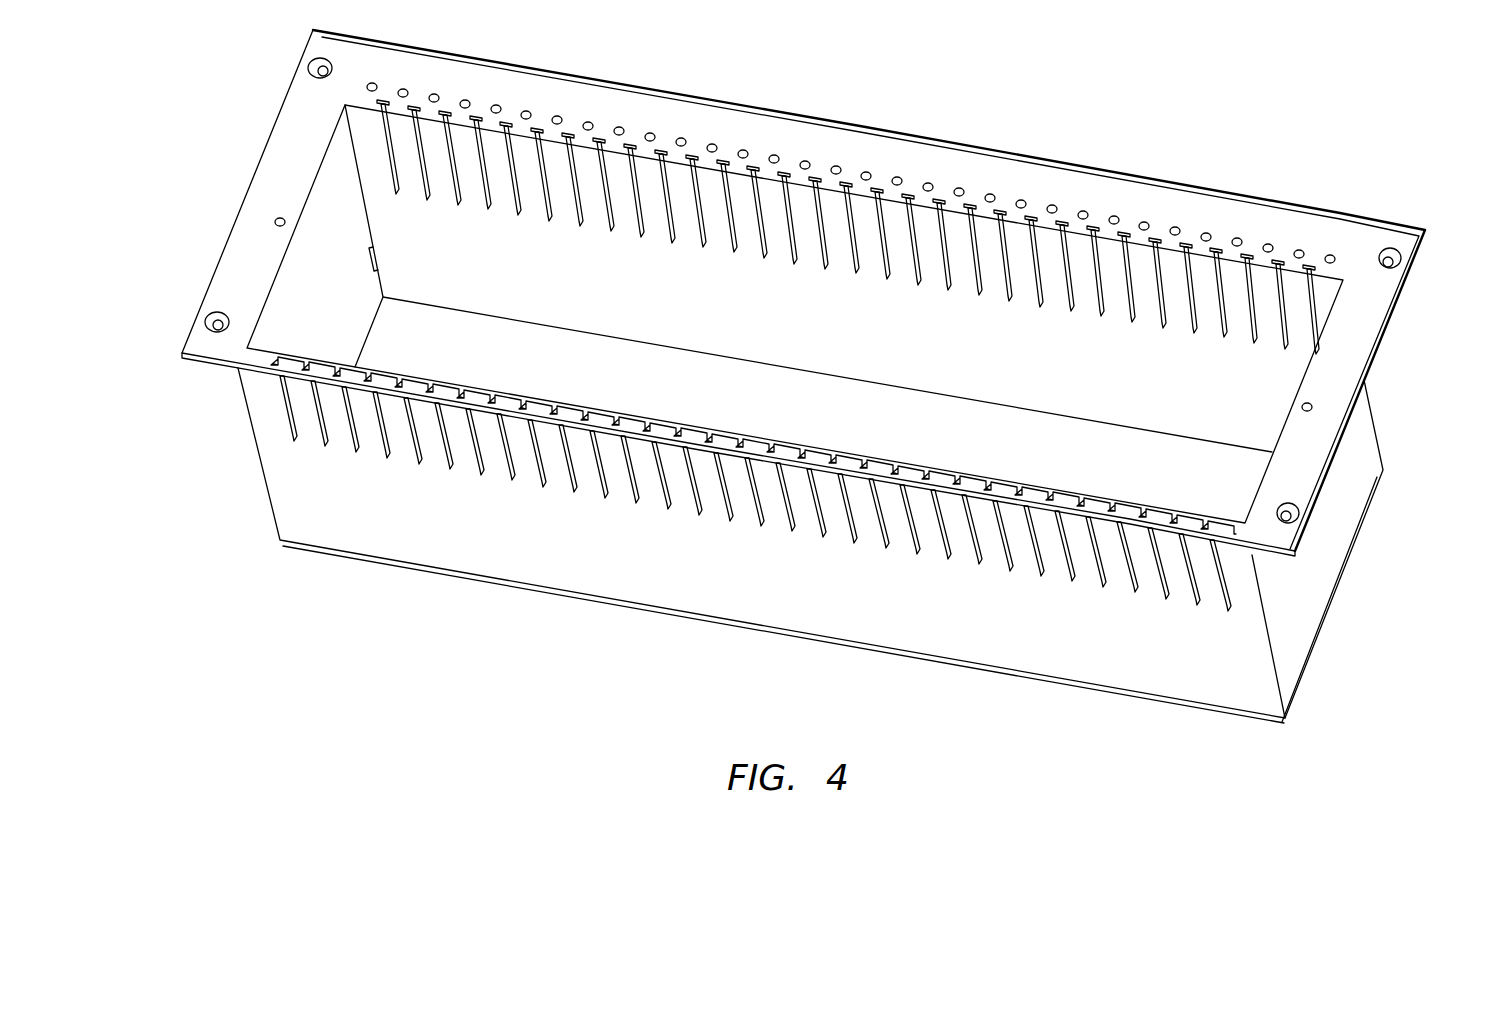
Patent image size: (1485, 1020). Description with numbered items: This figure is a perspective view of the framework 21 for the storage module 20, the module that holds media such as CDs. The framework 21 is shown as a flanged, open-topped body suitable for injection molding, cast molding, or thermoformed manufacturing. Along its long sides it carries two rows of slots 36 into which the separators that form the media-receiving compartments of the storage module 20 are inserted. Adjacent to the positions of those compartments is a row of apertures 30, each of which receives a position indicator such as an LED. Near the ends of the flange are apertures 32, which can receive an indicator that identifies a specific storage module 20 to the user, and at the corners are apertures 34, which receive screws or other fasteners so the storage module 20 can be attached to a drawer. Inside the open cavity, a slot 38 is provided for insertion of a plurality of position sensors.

The storage module 20 is at (785, 132).
The framework 21 is at (785, 324).
The apertures 30 is at (533, 110).
The apertures 32 is at (278, 216).
The apertures 34 is at (312, 58).
The slots 36 is at (603, 138).
The slot 38 is at (379, 256).